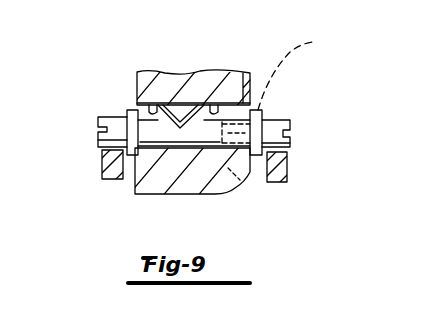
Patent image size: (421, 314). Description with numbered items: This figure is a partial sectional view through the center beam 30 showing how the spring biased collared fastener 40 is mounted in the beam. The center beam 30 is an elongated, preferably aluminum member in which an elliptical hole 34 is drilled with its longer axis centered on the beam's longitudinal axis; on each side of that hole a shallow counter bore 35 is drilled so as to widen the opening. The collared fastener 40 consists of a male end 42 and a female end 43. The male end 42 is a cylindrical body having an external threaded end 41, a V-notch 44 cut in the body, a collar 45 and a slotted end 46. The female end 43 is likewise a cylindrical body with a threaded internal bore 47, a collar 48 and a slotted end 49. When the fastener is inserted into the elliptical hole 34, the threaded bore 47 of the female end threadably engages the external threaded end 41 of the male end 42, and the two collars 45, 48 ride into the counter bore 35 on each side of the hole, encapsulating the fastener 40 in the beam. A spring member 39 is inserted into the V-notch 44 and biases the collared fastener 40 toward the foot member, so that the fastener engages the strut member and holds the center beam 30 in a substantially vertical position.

The center beam 30 is at (145, 77).
The elliptical hole 34 is at (258, 110).
The counter bore 35 is at (132, 102).
The spring member 39 is at (208, 78).
The spring biased collared fastener 40 is at (97, 124).
The external threaded end 41 is at (247, 185).
The male end 42 is at (114, 112).
The female end 43 is at (275, 123).
The V-notch 44 is at (160, 110).
The collar 45 is at (130, 153).
The slotted end 46 is at (98, 130).
The threaded internal bore 47 is at (301, 69).
The collar 48 is at (267, 115).
The slotted end 49 is at (290, 147).